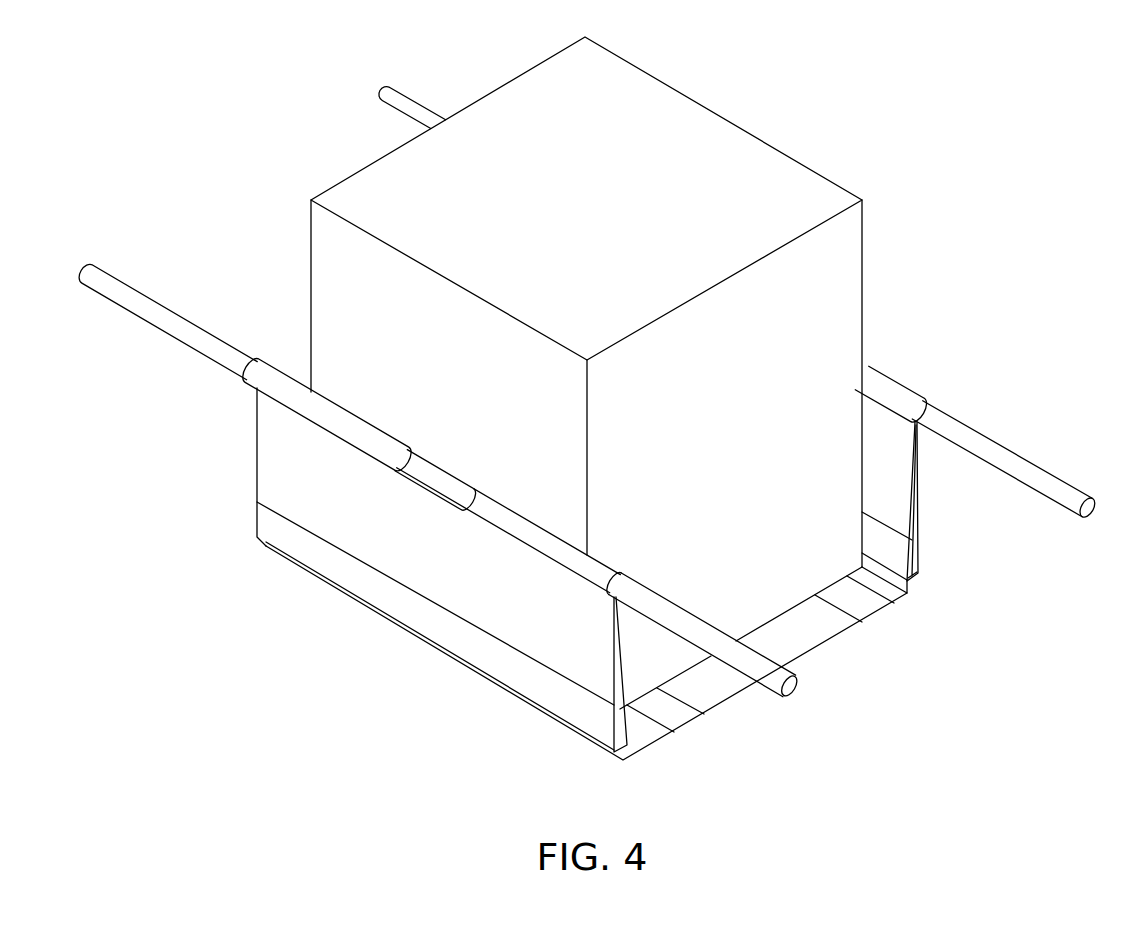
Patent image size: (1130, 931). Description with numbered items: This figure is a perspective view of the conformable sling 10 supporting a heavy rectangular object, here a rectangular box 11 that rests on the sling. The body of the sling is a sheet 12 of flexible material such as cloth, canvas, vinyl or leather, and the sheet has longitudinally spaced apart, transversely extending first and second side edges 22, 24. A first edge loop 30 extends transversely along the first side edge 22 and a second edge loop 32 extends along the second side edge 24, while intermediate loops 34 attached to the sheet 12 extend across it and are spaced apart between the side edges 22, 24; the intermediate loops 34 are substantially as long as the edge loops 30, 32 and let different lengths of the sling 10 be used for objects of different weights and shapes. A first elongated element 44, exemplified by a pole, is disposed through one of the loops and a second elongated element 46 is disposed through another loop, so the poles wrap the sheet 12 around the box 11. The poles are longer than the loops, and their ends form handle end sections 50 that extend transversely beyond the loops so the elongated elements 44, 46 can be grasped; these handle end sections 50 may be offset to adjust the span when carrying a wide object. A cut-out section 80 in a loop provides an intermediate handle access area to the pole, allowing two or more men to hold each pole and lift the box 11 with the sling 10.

The conformable sling 10 is at (835, 640).
The rectangular box 11 is at (862, 252).
The sheet 12 is at (720, 695).
The first side edge 22 is at (555, 675).
The second side edge 24 is at (920, 532).
The first edge loop 30 is at (360, 598).
The second edge loop 32 is at (925, 553).
The intermediate loops 34 is at (282, 358).
The first elongated element 44 is at (800, 690).
The second elongated element 46 is at (1078, 483).
The handle end sections 50 is at (150, 328).
The cut-out sections 80 is at (432, 468).